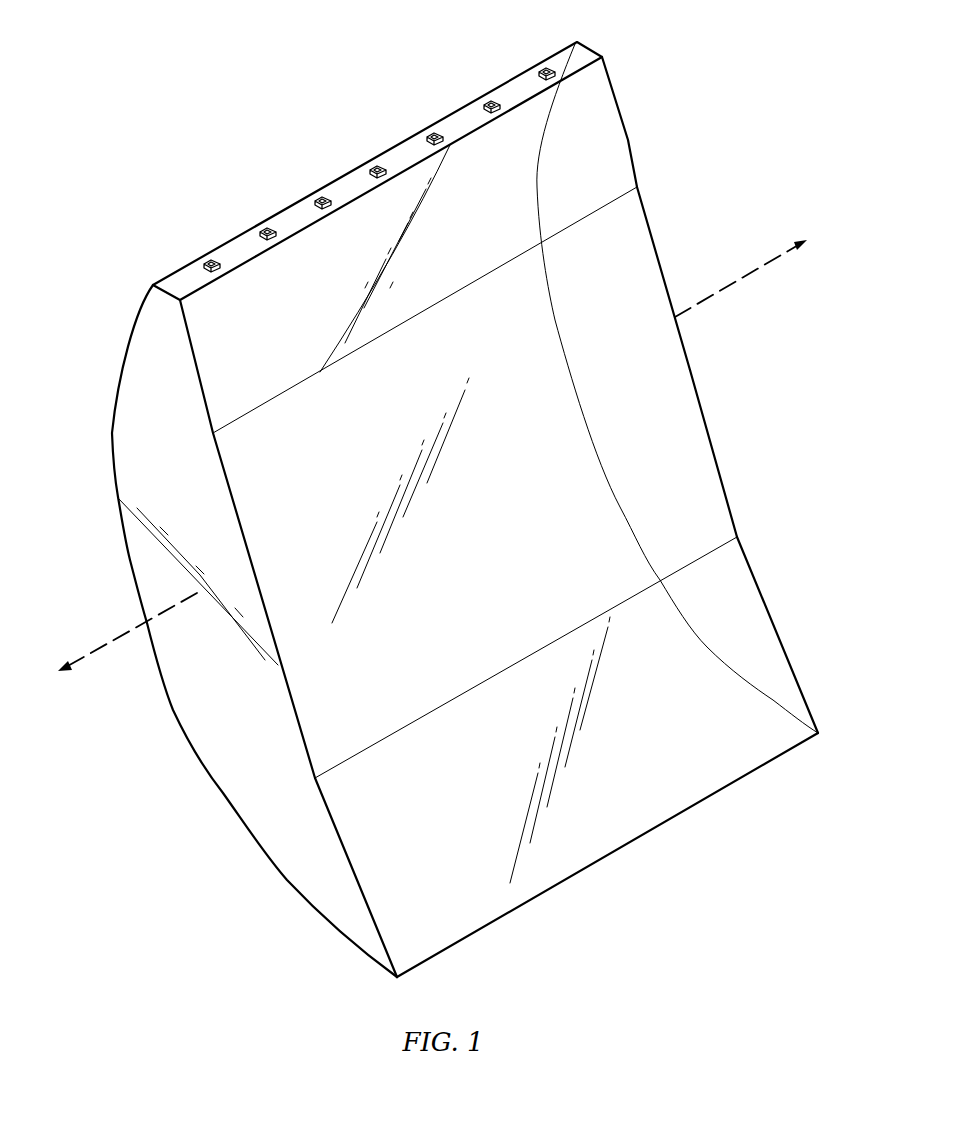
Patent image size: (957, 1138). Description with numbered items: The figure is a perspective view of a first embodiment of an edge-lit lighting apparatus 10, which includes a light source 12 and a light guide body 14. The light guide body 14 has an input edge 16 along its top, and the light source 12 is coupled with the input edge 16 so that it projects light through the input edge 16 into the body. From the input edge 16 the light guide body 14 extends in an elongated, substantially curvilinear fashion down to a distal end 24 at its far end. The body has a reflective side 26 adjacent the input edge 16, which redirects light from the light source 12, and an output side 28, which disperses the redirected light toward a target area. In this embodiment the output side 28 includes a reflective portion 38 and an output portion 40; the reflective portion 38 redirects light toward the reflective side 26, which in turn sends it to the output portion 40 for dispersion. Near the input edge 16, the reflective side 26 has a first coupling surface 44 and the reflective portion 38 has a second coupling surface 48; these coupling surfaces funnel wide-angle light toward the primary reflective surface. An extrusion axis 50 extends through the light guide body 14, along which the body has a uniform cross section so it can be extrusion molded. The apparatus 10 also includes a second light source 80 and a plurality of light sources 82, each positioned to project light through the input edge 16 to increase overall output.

The edge-lit lighting apparatus 10 is at (767, 125).
The light source 12 is at (212, 258).
The light guide body 14 is at (657, 258).
The input edge 16 is at (572, 55).
The distal end 24 is at (448, 950).
The reflective side 26 is at (97, 453).
The output side 28 is at (734, 401).
The reflective portion 38 is at (717, 465).
The output portion 40 is at (782, 638).
The first coupling surface 44 is at (140, 310).
The second coupling surface 48 is at (631, 142).
The extrusion axis 50 is at (102, 650).
The second light source 80 is at (268, 227).
The plurality of light sources 82 is at (323, 196).